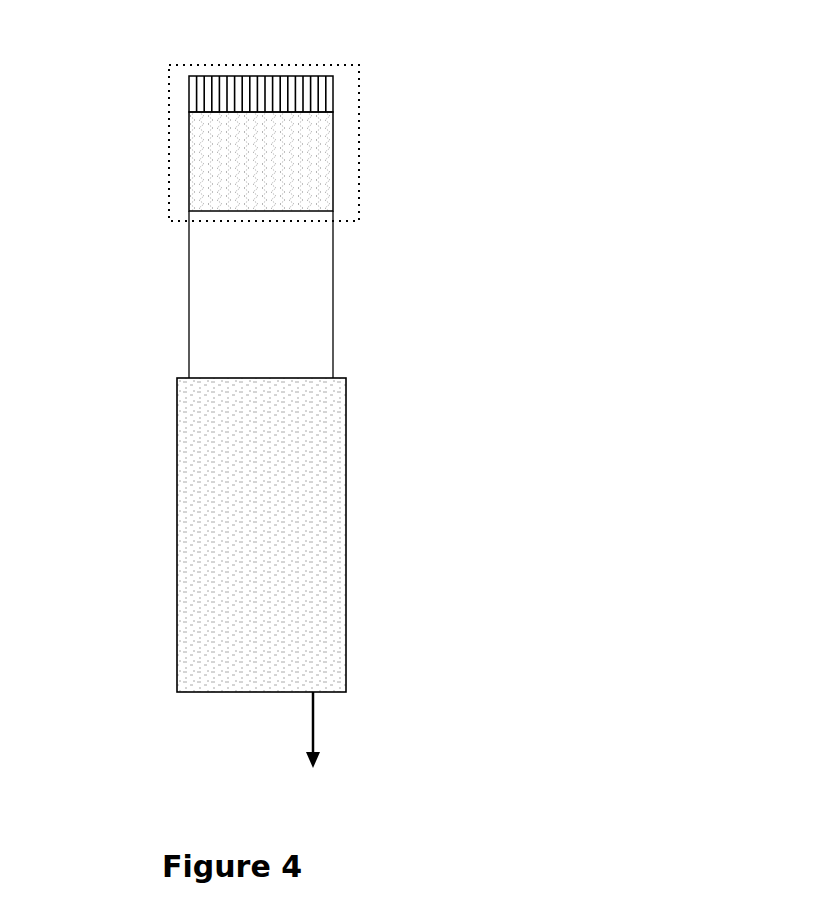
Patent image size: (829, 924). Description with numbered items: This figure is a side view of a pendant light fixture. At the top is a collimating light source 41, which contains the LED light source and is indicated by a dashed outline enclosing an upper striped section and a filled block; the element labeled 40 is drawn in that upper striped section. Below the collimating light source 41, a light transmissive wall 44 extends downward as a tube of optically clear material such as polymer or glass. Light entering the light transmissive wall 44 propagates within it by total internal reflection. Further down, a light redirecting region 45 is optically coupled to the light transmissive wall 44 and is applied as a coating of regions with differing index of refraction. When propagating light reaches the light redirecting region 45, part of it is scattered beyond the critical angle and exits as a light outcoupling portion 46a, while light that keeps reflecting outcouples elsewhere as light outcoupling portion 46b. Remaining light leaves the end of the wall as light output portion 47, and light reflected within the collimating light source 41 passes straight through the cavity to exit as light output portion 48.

The filter section 40 is at (300, 81).
The collimating light source 41 is at (167, 143).
The light transmissive wall 44 is at (195, 242).
The light redirecting region 45 is at (313, 423).
The light outcoupling portion 46a is at (188, 459).
The light outcoupling portion 46b is at (188, 668).
The light output portion 47 is at (192, 665).
The light output portion 48 is at (316, 747).